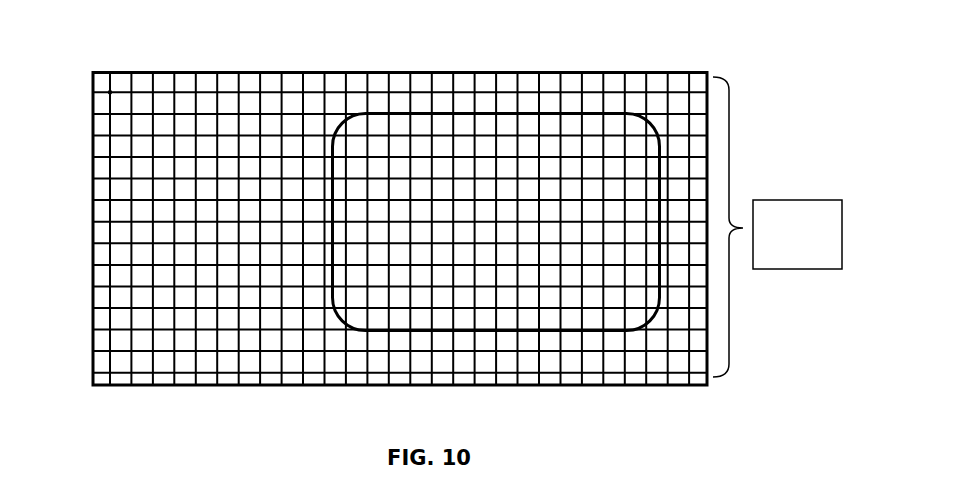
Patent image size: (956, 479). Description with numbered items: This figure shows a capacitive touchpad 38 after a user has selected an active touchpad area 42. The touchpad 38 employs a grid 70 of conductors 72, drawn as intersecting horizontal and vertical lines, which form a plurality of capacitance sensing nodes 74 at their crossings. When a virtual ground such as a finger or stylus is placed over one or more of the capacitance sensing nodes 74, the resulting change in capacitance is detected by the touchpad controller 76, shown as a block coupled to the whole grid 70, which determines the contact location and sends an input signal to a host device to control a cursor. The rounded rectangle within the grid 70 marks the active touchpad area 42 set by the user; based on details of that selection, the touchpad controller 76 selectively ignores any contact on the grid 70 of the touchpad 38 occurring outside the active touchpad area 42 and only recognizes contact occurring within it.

The touchpad 38 is at (677, 67).
The active touchpad area 42 is at (485, 105).
The grid 70 is at (100, 241).
The conductors 72 is at (113, 74).
The capacitance sensing nodes 74 is at (100, 100).
The touchpad controller 76 is at (777, 227).